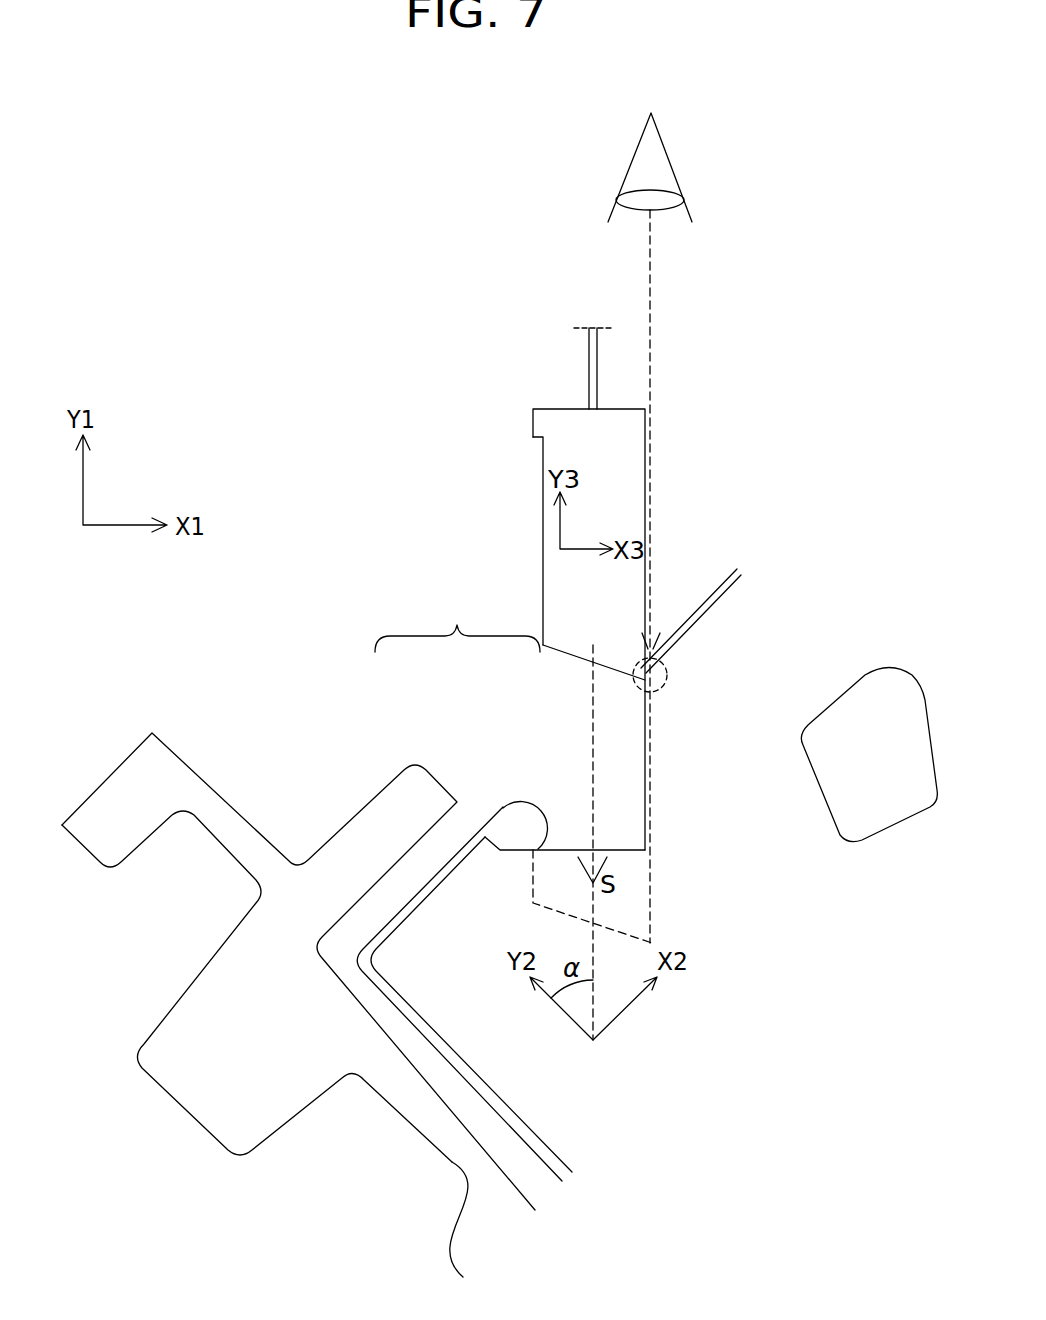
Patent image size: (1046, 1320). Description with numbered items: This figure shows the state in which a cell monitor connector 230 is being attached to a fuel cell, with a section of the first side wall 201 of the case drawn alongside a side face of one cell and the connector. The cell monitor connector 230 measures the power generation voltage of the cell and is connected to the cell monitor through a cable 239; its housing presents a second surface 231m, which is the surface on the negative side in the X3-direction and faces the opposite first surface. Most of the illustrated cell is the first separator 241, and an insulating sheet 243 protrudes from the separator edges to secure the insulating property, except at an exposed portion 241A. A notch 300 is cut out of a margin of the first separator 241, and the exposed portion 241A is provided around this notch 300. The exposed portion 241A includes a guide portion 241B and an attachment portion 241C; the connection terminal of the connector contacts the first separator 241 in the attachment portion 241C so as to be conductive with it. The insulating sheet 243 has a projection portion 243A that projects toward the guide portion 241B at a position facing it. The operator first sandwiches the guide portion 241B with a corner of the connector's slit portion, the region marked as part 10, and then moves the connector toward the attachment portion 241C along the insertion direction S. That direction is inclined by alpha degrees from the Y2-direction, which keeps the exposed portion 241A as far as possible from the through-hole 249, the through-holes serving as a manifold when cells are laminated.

The part 10 is at (668, 676).
The first side wall 201 is at (420, 1107).
The cell monitor connector 230 is at (545, 425).
The second surface 231m is at (543, 562).
The cable 239 is at (593, 363).
The first separator 241 is at (545, 1087).
The exposed portion 241A is at (457, 621).
The guide portion 241B is at (645, 773).
The attachment portion 241C is at (572, 878).
The insulating sheet 243 is at (717, 592).
The projection portion 243A is at (517, 815).
The through-hole 249 is at (887, 791).
The notch 300 is at (613, 820).